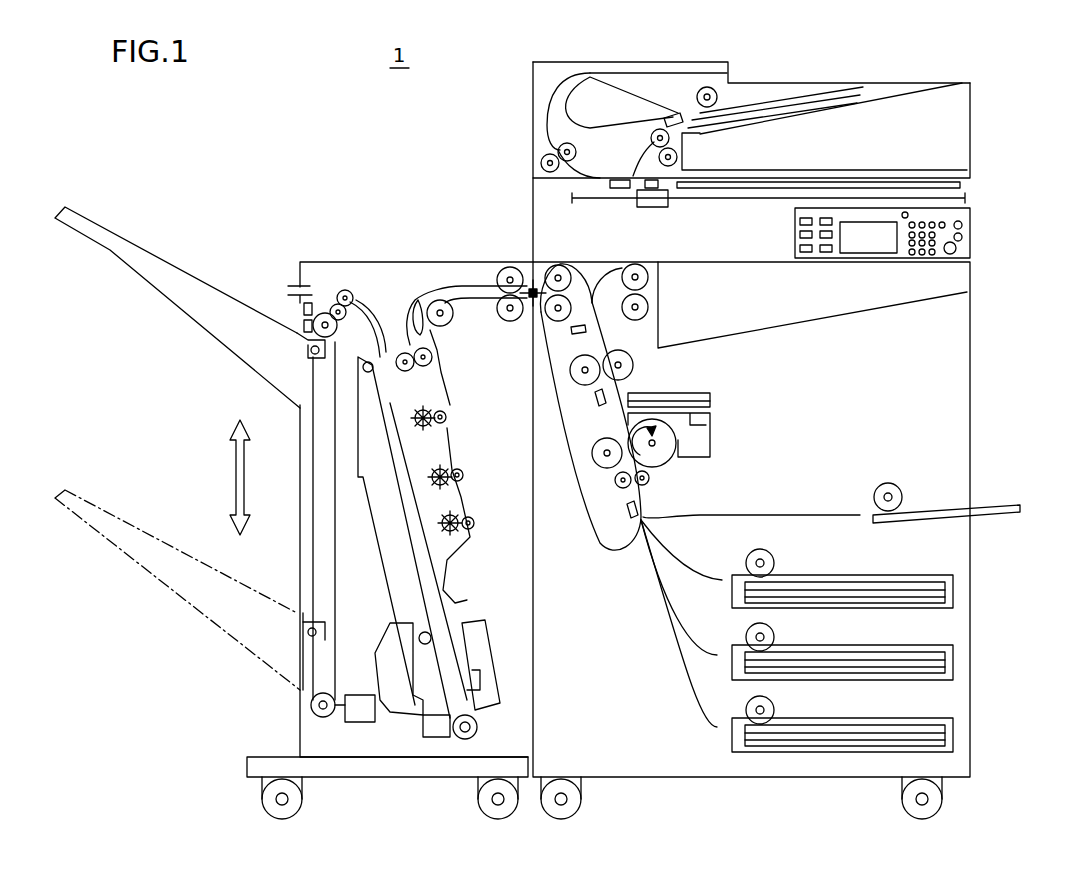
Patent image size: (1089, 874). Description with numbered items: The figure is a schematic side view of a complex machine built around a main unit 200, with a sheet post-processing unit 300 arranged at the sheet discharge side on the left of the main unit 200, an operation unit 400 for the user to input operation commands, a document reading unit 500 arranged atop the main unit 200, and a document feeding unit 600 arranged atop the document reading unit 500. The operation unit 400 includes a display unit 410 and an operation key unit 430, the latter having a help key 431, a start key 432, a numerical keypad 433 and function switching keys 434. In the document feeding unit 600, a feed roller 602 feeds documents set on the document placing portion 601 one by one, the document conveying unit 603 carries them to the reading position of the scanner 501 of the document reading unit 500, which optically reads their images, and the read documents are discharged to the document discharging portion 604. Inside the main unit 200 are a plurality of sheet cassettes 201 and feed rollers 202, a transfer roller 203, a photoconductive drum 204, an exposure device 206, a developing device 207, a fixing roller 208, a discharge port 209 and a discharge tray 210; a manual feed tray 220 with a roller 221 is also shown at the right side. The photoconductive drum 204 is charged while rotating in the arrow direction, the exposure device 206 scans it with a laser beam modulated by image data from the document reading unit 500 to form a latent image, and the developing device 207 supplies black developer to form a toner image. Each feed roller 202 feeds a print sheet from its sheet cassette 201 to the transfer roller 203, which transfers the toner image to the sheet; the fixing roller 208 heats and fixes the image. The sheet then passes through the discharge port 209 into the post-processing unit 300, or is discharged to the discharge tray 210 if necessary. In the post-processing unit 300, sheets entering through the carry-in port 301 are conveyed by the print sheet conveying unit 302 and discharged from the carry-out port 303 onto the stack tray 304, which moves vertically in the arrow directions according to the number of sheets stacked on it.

The main unit 200 is at (940, 407).
The sheet cassette 201 is at (950, 591).
The feed roller 202 is at (776, 563).
The transfer roller 203 is at (606, 461).
The photoconductive drum 204 is at (661, 461).
The exposure device 206 is at (706, 399).
The developing device 207 is at (708, 428).
The fixing roller 208 is at (584, 381).
The discharge port 209 is at (555, 267).
The discharge tray 210 is at (840, 318).
The manual feed tray 220 is at (983, 501).
The manual feed roller 221 is at (878, 486).
The sheet post-processing unit 300 is at (364, 257).
The carry-in port 301 is at (510, 267).
The print sheet conveying unit 302 is at (443, 286).
The carry-out port 303 is at (290, 288).
The stack tray 304 is at (222, 356).
The operation unit 400 is at (975, 240).
The display unit 410 is at (870, 230).
The operation key unit 430 is at (972, 254).
The help key 431 is at (907, 212).
The start key 432 is at (950, 254).
The numerical keypad 433 is at (920, 257).
The function switching keys 434 is at (795, 242).
The document reading unit 500 is at (978, 184).
The scanner 501 is at (660, 205).
The document feeding unit 600 is at (799, 82).
The document placing portion 601 is at (893, 90).
The feed roller 602 is at (715, 92).
The document conveying unit 603 is at (592, 128).
The document discharging portion 604 is at (780, 170).